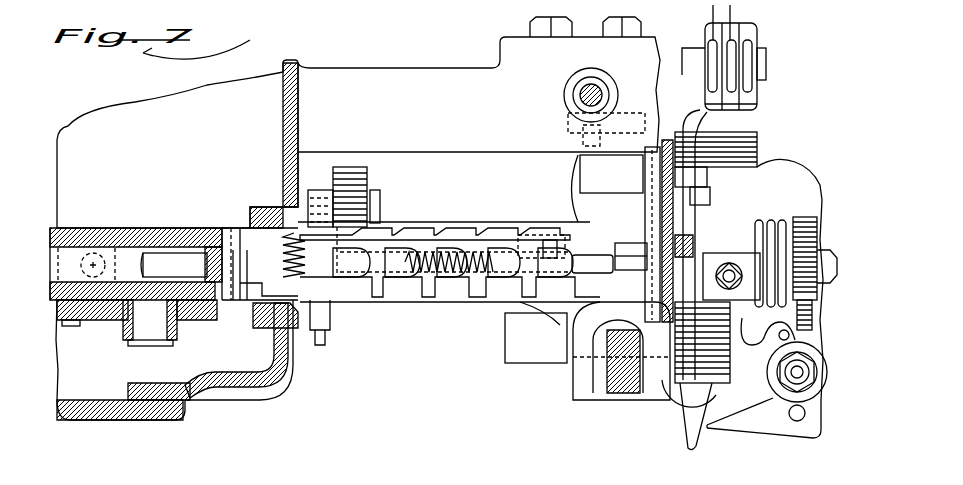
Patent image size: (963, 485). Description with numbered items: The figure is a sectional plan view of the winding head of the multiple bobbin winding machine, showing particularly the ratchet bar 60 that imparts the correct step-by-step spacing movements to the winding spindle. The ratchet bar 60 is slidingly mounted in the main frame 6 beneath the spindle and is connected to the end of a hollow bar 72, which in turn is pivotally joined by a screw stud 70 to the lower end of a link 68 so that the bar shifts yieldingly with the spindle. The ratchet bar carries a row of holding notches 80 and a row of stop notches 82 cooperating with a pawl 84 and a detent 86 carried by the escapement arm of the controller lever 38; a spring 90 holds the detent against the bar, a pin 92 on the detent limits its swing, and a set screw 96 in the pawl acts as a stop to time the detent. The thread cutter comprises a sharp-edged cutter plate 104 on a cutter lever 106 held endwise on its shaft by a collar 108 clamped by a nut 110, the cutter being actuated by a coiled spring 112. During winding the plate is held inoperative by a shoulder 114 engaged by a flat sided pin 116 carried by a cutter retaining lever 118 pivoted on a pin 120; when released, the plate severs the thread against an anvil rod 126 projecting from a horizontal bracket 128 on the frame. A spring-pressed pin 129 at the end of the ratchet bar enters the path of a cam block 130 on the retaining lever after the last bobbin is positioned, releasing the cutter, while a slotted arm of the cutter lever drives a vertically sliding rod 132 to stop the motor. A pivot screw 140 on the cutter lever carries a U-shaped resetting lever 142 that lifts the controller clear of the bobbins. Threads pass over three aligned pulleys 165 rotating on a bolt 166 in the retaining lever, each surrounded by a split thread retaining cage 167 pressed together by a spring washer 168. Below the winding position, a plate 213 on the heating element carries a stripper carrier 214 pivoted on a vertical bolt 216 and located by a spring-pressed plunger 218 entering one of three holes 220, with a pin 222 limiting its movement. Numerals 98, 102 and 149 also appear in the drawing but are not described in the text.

The main frame 6 is at (177, 240).
The lever 38 is at (350, 320).
The ratchet bar 60 is at (247, 232).
The link 68 is at (110, 320).
The screw stud 70 is at (152, 343).
The hollow bar 72 is at (155, 236).
The holding notches 80 is at (440, 285).
The stop notches 82 is at (513, 228).
The pawl 84 is at (272, 328).
The detent 86 is at (318, 197).
The spring 90 is at (260, 264).
The pin 92 is at (380, 206).
The set screw 96 is at (322, 330).
The support 98 is at (253, 322).
The bore 102 is at (97, 240).
The cutter plate 104 is at (731, 271).
The cutter lever 106 is at (735, 342).
The collar 108 is at (795, 215).
The nut 110 is at (820, 185).
The spring 112 is at (777, 232).
The shoulder 114 is at (700, 245).
The flat sided pin 116 is at (690, 262).
The cutter retaining lever 118 is at (645, 178).
The pin 120 is at (573, 383).
The anvil rod 126 is at (758, 140).
The horizontal bracket 128 is at (479, 119).
The spring-pressed pin 129 is at (590, 260).
The cam block 130 is at (650, 230).
The vertically sliding rod 132 is at (580, 95).
The pivot screw 140 is at (707, 188).
The resetting lever 142 is at (695, 210).
The post 149 is at (230, 268).
The pulleys 165 is at (735, 30).
The bolt 166 is at (772, 64).
The split thread retaining cage 167 is at (752, 110).
The spring washer 168 is at (755, 45).
The plate 213 is at (767, 432).
The carrier 214 is at (733, 412).
The vertical bolt 216 is at (675, 398).
The spring-pressed plunger 218 is at (777, 390).
The holes 220 is at (798, 421).
The pin 222 is at (790, 342).